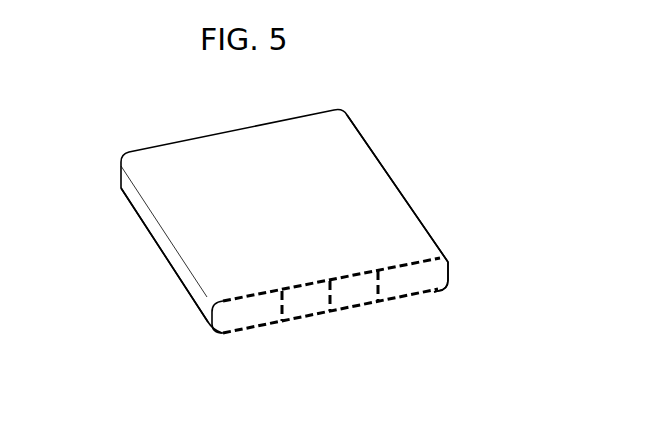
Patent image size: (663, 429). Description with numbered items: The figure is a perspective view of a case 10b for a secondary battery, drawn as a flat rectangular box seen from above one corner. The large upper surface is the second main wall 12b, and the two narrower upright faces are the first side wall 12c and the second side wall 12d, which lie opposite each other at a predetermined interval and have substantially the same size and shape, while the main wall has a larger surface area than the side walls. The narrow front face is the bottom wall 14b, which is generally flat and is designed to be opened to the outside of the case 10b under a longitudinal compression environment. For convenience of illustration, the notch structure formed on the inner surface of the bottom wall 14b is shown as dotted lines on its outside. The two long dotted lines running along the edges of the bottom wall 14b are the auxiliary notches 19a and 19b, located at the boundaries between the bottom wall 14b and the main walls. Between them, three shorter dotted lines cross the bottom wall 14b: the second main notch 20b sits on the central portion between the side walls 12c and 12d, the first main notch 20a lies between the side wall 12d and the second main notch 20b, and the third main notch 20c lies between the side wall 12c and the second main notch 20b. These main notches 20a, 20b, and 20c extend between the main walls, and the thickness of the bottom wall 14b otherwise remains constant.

The case 10b is at (103, 142).
The second main wall 12b is at (200, 232).
The first side wall 12c is at (400, 179).
The second side wall 12d is at (178, 267).
The bottom wall 14b is at (432, 273).
The auxiliary notch 19a is at (268, 325).
The auxiliary notch 19b is at (242, 302).
The first main notch 20a is at (283, 298).
The second main notch 20b is at (331, 290).
The third main notch 20c is at (378, 281).